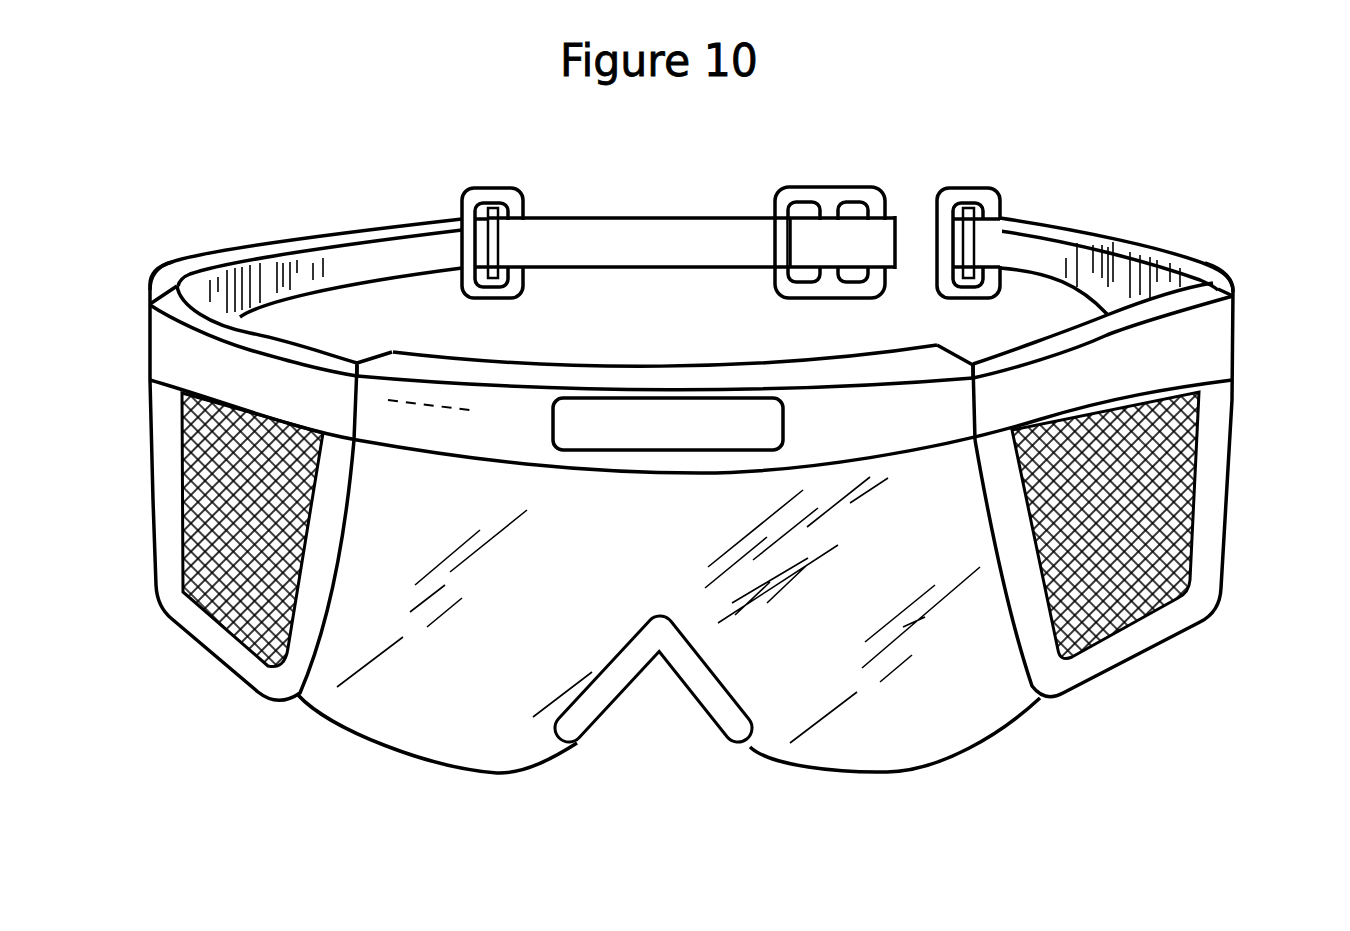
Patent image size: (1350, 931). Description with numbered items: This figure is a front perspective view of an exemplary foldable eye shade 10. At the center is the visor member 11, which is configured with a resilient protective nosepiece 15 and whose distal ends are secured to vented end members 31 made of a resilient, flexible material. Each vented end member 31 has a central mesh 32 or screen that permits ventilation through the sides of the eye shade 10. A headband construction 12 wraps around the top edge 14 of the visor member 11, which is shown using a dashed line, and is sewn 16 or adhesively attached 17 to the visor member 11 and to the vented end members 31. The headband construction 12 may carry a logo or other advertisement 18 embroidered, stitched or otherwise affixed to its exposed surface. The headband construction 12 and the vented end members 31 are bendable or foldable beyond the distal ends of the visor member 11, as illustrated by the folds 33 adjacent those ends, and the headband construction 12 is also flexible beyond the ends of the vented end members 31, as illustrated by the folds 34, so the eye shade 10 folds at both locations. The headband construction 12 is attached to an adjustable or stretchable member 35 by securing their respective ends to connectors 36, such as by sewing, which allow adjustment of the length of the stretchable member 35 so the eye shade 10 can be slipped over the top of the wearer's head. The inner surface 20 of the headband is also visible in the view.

The foldable eye shade 10 is at (1172, 770).
The visor member 11 is at (410, 735).
The headband construction 12 is at (1262, 328).
The top edge 14 is at (447, 407).
The resilient protective nosepiece 15 is at (733, 727).
The sewn attachment 16 is at (193, 378).
The adhesive attachment 17 is at (413, 438).
The advertisement 18 is at (745, 397).
The inner surface of headband 20 is at (1118, 250).
The vented end members 31 is at (238, 662).
The central mesh 32 is at (183, 545).
The folds 33 is at (374, 360).
The folds 34 is at (149, 279).
The adjustable or stretchable member 35 is at (621, 217).
The connectors 36 is at (479, 187).